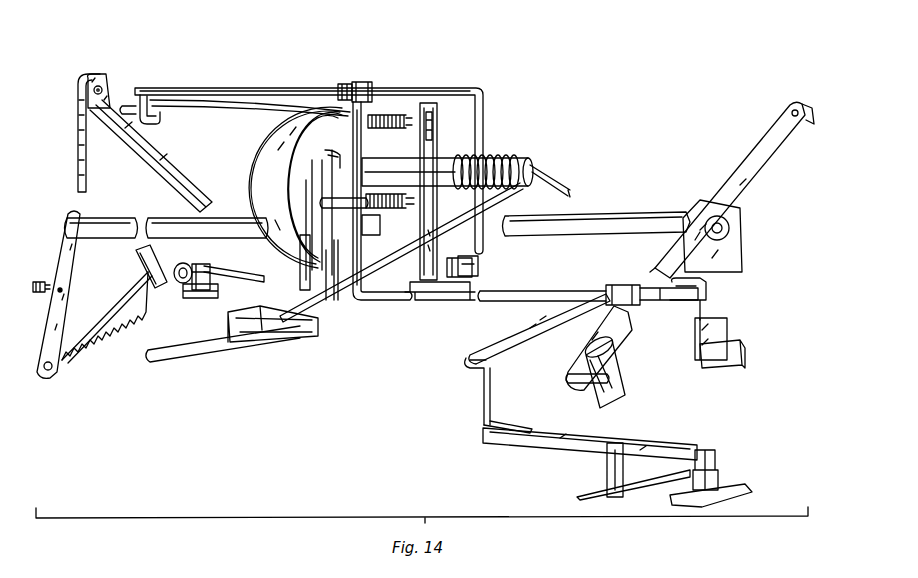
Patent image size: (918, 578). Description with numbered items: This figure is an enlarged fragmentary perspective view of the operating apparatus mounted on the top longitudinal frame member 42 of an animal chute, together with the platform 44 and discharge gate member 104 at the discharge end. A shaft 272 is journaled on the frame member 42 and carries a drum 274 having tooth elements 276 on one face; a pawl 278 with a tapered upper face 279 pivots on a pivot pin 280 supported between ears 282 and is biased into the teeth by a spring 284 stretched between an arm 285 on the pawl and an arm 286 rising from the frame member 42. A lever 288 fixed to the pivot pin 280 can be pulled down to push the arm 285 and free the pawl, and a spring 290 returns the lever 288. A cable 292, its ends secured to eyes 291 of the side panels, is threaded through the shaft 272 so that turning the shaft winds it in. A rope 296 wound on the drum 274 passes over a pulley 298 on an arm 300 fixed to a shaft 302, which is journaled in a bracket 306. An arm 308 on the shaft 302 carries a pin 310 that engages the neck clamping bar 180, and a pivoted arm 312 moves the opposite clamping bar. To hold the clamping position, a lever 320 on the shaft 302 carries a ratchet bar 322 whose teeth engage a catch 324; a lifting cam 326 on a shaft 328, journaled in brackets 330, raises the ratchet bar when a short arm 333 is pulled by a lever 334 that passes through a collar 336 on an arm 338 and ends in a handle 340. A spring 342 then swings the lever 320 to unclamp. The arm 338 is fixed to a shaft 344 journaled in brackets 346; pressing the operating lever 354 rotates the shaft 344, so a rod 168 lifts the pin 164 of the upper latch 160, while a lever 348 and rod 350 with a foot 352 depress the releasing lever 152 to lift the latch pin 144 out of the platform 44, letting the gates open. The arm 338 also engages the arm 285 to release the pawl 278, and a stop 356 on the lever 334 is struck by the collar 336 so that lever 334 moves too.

The longitudinal frame member 42 is at (205, 298).
The platform 44 is at (745, 491).
The discharge gate member 104 is at (736, 360).
The latch pin 144 is at (712, 452).
The releasing lever 152 is at (560, 446).
The latch 160 is at (728, 323).
The pin 164 is at (706, 292).
The rod 168 is at (664, 300).
The neck clamping bar 180 is at (614, 381).
The shaft 272 is at (520, 162).
The drum 274 is at (276, 198).
The tooth elements 276 is at (406, 133).
The pawl 278 is at (318, 192).
The tapered upper face 279 is at (325, 152).
The pivot pin 280 is at (336, 300).
The ears 282 is at (328, 300).
The spring 284 is at (392, 197).
The arm 285 is at (330, 205).
The arm 286 is at (437, 126).
The lever 288 is at (198, 108).
The spring 290 is at (390, 113).
The eyes 291 is at (268, 343).
The cable 292 is at (440, 234).
The rope 296 is at (77, 160).
The pulley 298 is at (100, 74).
The arm 300 is at (148, 150).
The shaft 302 is at (100, 218).
The bracket 306 is at (735, 219).
The arm 308 is at (748, 166).
The pin 310 is at (594, 402).
The arm 312 is at (808, 105).
The lever 320 is at (74, 268).
The ratchet bar 322 is at (80, 340).
The catch 324 is at (150, 282).
The lifting cam 326 is at (182, 265).
The shaft 328 is at (245, 282).
The brackets 330 is at (212, 270).
The short arm 333 is at (474, 264).
The lever 334 is at (218, 88).
The collar 336 is at (362, 82).
The arm 338 is at (372, 238).
The handle 340 is at (145, 94).
The spring 342 is at (40, 280).
The shaft 344 is at (445, 301).
The brackets 346 is at (382, 301).
The lever 348 is at (548, 326).
The rod 350 is at (490, 388).
The foot 352 is at (532, 431).
The operating lever 354 is at (190, 354).
The stop 356 is at (344, 84).